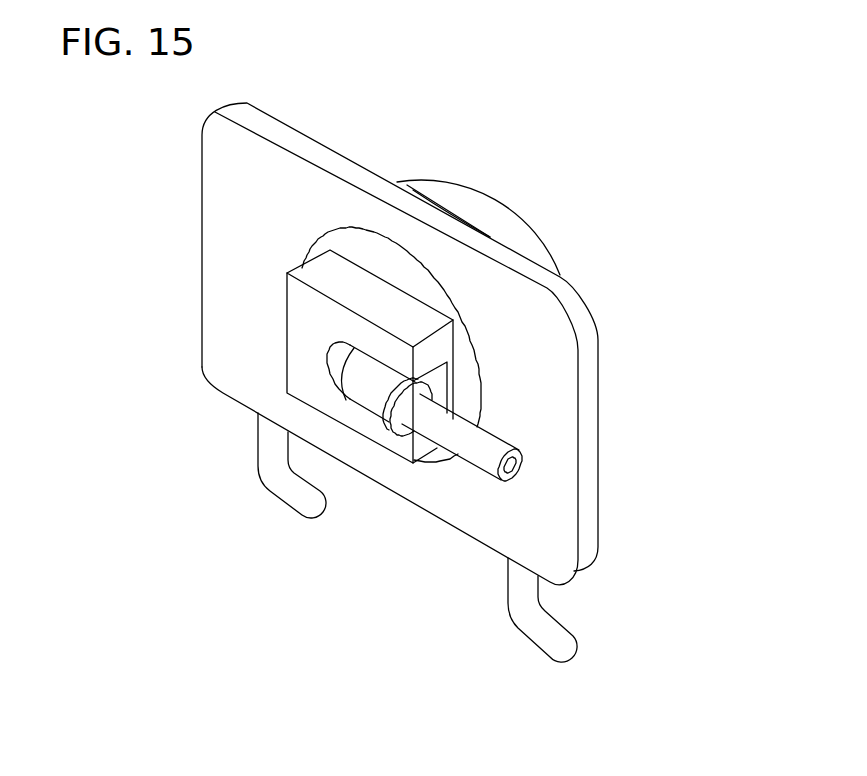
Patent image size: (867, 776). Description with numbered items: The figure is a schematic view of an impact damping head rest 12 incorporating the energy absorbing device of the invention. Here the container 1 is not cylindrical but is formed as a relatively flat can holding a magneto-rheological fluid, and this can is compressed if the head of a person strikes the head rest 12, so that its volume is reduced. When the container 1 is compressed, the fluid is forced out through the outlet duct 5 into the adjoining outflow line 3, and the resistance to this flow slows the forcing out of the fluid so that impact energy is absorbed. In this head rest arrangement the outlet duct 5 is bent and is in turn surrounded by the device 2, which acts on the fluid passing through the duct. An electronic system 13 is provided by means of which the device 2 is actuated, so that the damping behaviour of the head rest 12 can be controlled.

The container 1 is at (515, 230).
The device 2 is at (373, 410).
The outflow line 3 is at (470, 445).
The outlet duct 5 is at (352, 375).
The head rest 12 is at (530, 406).
The electronic system 13 is at (310, 318).